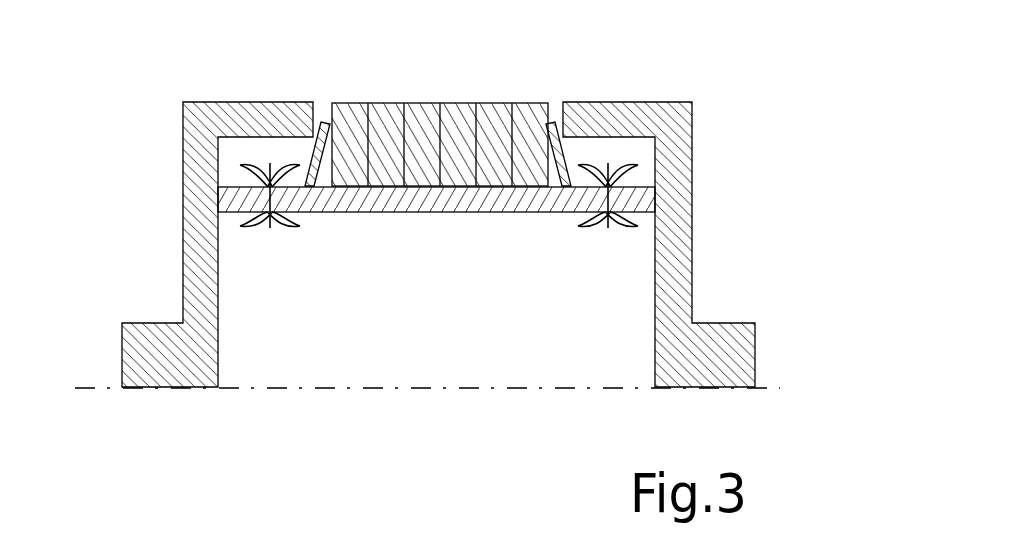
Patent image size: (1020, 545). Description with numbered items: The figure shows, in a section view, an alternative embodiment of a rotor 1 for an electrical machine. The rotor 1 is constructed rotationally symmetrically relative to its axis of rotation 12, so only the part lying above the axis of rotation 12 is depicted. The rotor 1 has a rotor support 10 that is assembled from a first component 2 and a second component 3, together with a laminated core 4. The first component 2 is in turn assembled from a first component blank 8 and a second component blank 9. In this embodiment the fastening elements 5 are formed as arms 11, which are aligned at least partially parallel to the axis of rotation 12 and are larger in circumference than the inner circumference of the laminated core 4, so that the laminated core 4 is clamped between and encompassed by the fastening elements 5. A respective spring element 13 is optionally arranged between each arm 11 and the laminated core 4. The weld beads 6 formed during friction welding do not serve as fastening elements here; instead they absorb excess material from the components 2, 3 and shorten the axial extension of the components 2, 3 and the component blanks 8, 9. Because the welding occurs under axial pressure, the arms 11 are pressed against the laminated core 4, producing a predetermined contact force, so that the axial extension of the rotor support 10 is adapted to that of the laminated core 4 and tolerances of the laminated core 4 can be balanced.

The rotor 1 is at (177, 401).
The first component 2 is at (435, 200).
The second component 3 is at (195, 270).
The laminated core 4 is at (425, 128).
The fastening element 5 is at (435, 236).
The weld bead 6 is at (268, 163).
The first component blank 8 is at (675, 260).
The second component blank 9 is at (440, 213).
The rotor support 10 is at (548, 318).
The arm 11 is at (207, 123).
The axis of rotation 12 is at (338, 388).
The spring element 13 is at (327, 122).